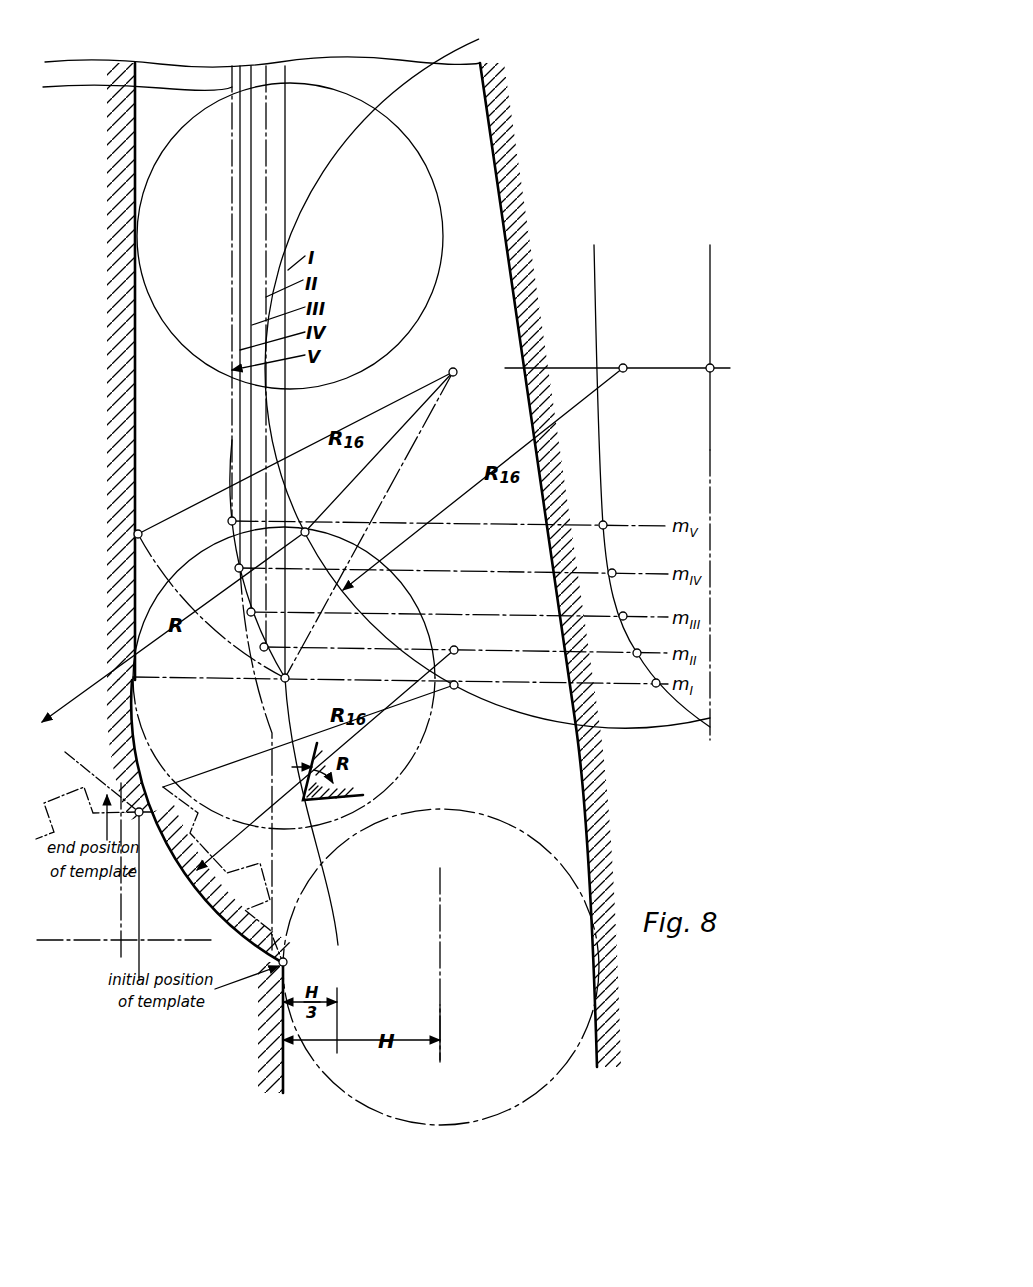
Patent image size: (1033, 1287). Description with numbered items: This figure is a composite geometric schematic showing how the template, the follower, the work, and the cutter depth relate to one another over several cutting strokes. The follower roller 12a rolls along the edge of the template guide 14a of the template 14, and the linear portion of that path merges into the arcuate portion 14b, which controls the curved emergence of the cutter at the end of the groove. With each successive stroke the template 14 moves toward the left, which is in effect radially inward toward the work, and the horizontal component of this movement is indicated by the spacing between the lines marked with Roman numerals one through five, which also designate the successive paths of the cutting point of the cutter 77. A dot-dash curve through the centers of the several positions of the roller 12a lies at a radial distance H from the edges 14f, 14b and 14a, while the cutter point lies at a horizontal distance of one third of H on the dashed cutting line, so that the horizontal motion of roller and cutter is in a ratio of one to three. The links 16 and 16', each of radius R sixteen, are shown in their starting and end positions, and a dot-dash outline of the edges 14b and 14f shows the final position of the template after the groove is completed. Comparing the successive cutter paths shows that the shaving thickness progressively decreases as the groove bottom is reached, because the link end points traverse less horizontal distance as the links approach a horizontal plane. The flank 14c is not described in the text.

The template 14 is at (447, 135).
The right flank wall of groove 14c is at (505, 143).
The template guide 14a is at (121, 431).
The arcuate portion 14b is at (42, 722).
The template edge 14f is at (136, 900).
The follower roller 12a is at (441, 200).
The link 16 is at (366, 826).
The link 16' is at (295, 525).
The cutter 77 is at (340, 771).